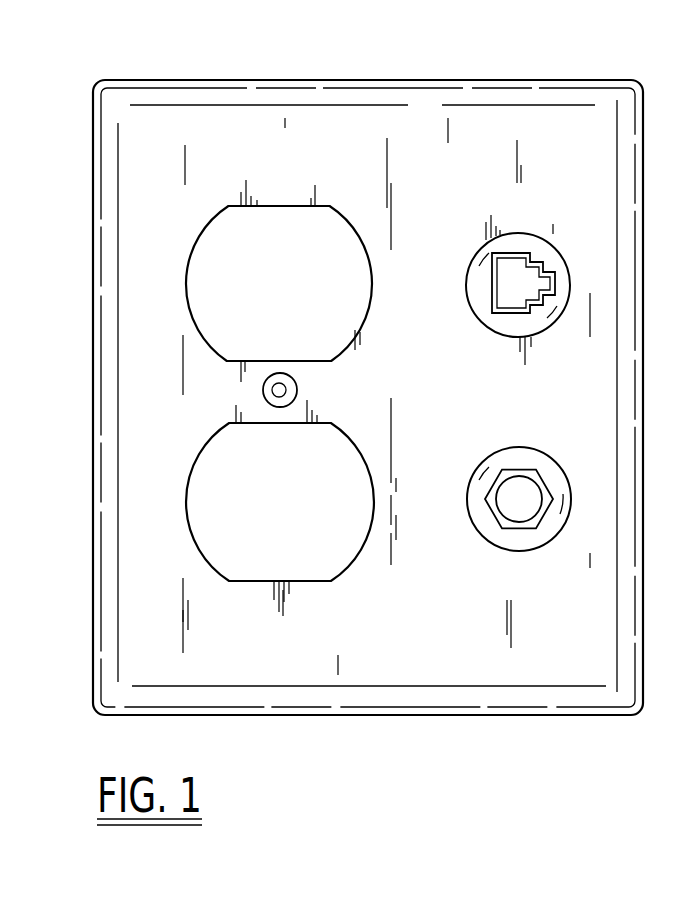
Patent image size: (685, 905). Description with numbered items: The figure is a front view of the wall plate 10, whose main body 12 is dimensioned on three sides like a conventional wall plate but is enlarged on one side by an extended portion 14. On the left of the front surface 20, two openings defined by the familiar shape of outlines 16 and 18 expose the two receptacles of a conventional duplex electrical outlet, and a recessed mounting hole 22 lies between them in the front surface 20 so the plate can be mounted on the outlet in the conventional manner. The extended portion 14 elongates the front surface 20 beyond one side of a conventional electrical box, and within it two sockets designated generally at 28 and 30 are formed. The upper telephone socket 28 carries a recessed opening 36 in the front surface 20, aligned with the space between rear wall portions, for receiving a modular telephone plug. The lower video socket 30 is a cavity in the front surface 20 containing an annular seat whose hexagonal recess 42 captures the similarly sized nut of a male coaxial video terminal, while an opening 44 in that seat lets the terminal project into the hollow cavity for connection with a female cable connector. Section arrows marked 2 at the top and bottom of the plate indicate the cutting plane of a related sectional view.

The plate 10 is at (612, 72).
The main body 12 is at (170, 93).
The extended portion 14 is at (628, 146).
The outline 16 is at (194, 245).
The outline 18 is at (194, 456).
The front surface 20 is at (415, 653).
The recessed mounting hole 22 is at (297, 390).
The telephone socket 28 is at (565, 252).
The video socket 30 is at (569, 470).
The recessed opening 36 is at (482, 306).
The hexagonal recess 42 is at (500, 476).
The opening 44 is at (497, 514).
The section line 2- 2 is at (493, 60).